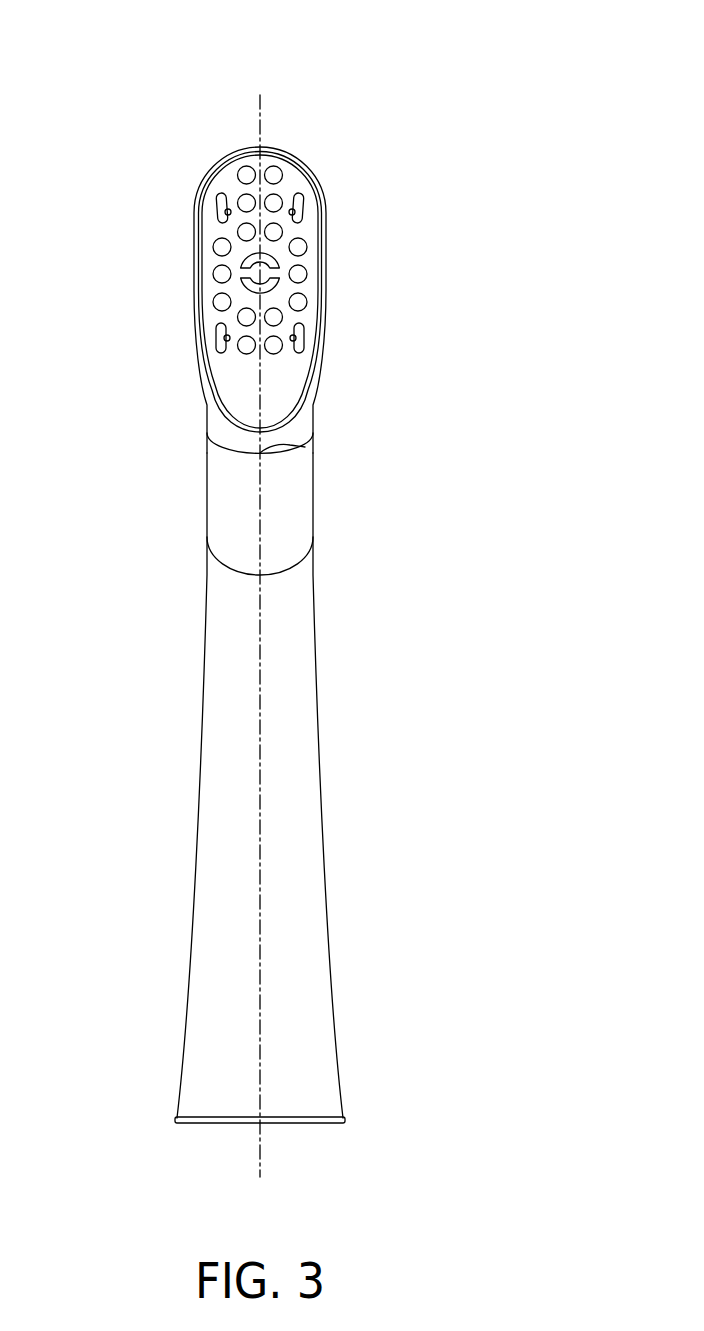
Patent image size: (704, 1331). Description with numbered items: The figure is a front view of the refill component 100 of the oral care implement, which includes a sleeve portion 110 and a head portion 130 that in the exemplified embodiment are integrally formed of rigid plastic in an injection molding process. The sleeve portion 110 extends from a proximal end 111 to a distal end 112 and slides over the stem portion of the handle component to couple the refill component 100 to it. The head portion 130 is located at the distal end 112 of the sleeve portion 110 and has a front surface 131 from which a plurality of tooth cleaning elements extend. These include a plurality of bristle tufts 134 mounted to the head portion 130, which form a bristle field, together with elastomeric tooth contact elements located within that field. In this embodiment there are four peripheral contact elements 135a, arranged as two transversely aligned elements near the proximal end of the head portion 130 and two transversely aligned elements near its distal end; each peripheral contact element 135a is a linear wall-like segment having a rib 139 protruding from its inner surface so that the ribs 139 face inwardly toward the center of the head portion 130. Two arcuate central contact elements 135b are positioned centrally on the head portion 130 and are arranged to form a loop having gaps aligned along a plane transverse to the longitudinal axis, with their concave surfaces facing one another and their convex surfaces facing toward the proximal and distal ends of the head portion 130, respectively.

The refill component 100 is at (442, 755).
The sleeve portion 110 is at (293, 898).
The proximal end 111 is at (185, 1123).
The distal end 112 is at (305, 447).
The head portion 130 is at (318, 312).
The front surface 131 is at (297, 378).
The bristle tufts 134 is at (241, 166).
The peripheral contact elements 135a is at (220, 193).
The central contact elements 135b is at (310, 241).
The rib 139 is at (275, 258).